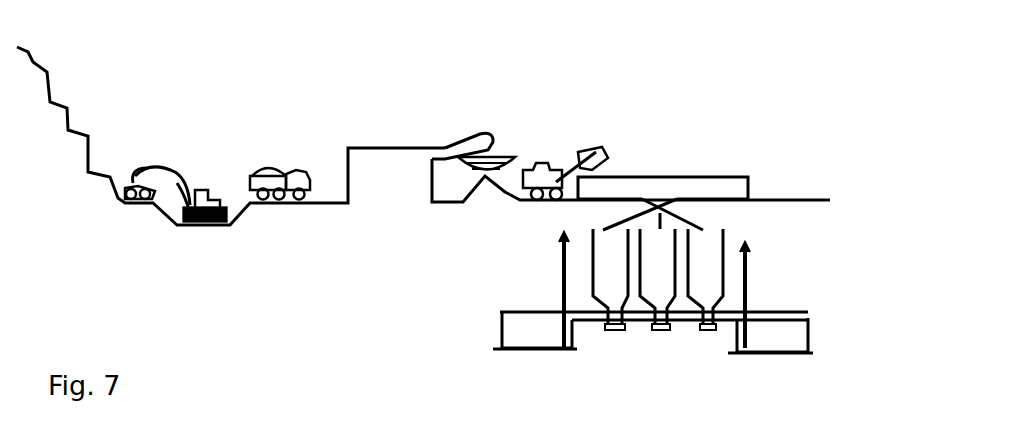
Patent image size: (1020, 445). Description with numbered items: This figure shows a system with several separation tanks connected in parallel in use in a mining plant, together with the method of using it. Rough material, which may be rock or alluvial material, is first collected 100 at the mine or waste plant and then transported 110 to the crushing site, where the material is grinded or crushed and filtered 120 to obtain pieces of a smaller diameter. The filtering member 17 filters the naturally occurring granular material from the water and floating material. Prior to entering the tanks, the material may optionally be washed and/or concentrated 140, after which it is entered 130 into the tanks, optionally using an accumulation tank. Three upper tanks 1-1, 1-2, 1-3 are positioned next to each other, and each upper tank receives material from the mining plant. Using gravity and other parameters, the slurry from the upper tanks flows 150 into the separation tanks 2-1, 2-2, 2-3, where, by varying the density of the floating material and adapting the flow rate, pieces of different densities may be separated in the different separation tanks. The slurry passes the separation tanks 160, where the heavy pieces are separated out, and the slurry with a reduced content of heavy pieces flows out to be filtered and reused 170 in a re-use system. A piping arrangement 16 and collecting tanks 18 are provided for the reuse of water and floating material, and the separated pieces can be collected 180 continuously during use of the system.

The collecting step 100 is at (133, 147).
The transporting step 110 is at (276, 148).
The grinding, crushing and filtering step 120 is at (493, 136).
The filtering member 17 is at (507, 157).
The washing and/or concentrating step 140 is at (673, 172).
The entering step 130 is at (701, 214).
The first upper tank 1-1 is at (610, 276).
The second upper tank 1-2 is at (657, 276).
The third upper tank 1-3 is at (705, 276).
The first separation tank 2-1 is at (612, 327).
The second separation tank 2-2 is at (665, 328).
The third separation tank 2-3 is at (703, 328).
The slurry flow step 150 is at (596, 305).
The separation tank passing step 160 is at (645, 328).
The filtering and reuse step 170 is at (492, 327).
The collecting step for separated pieces 180 is at (714, 333).
The collecting tank 18 is at (792, 338).
The piping arrangement 16 is at (749, 281).